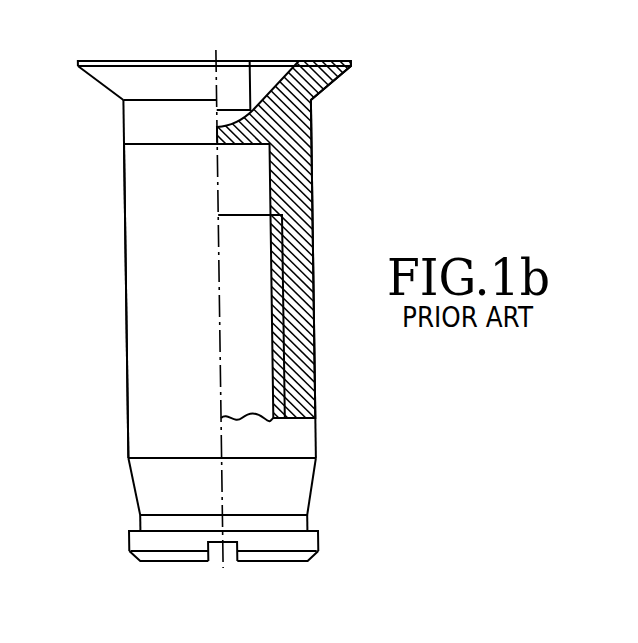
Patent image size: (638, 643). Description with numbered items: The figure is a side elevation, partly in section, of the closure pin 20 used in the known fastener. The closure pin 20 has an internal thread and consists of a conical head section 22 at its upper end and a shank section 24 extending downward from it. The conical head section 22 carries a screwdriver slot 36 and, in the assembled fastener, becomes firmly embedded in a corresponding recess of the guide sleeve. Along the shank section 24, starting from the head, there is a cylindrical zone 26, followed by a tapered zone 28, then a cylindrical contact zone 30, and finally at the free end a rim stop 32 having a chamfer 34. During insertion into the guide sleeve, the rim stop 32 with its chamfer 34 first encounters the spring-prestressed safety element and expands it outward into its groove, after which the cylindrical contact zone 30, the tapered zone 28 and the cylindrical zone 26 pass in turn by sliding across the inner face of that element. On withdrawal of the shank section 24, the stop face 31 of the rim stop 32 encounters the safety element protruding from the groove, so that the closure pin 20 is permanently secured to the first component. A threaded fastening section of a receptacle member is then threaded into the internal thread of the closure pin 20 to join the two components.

The closure pin 20 is at (100, 279).
The conical head section 22 is at (109, 80).
The shank section 24 is at (152, 203).
The cylindrical zone 26 is at (119, 404).
The tapered zone 28 is at (295, 477).
The cylindrical contact zone 30 is at (296, 515).
The stop face 31 is at (123, 530).
The rim stop 32 is at (282, 543).
The chamfer 34 is at (240, 562).
The screwdriver slot 36 is at (267, 67).